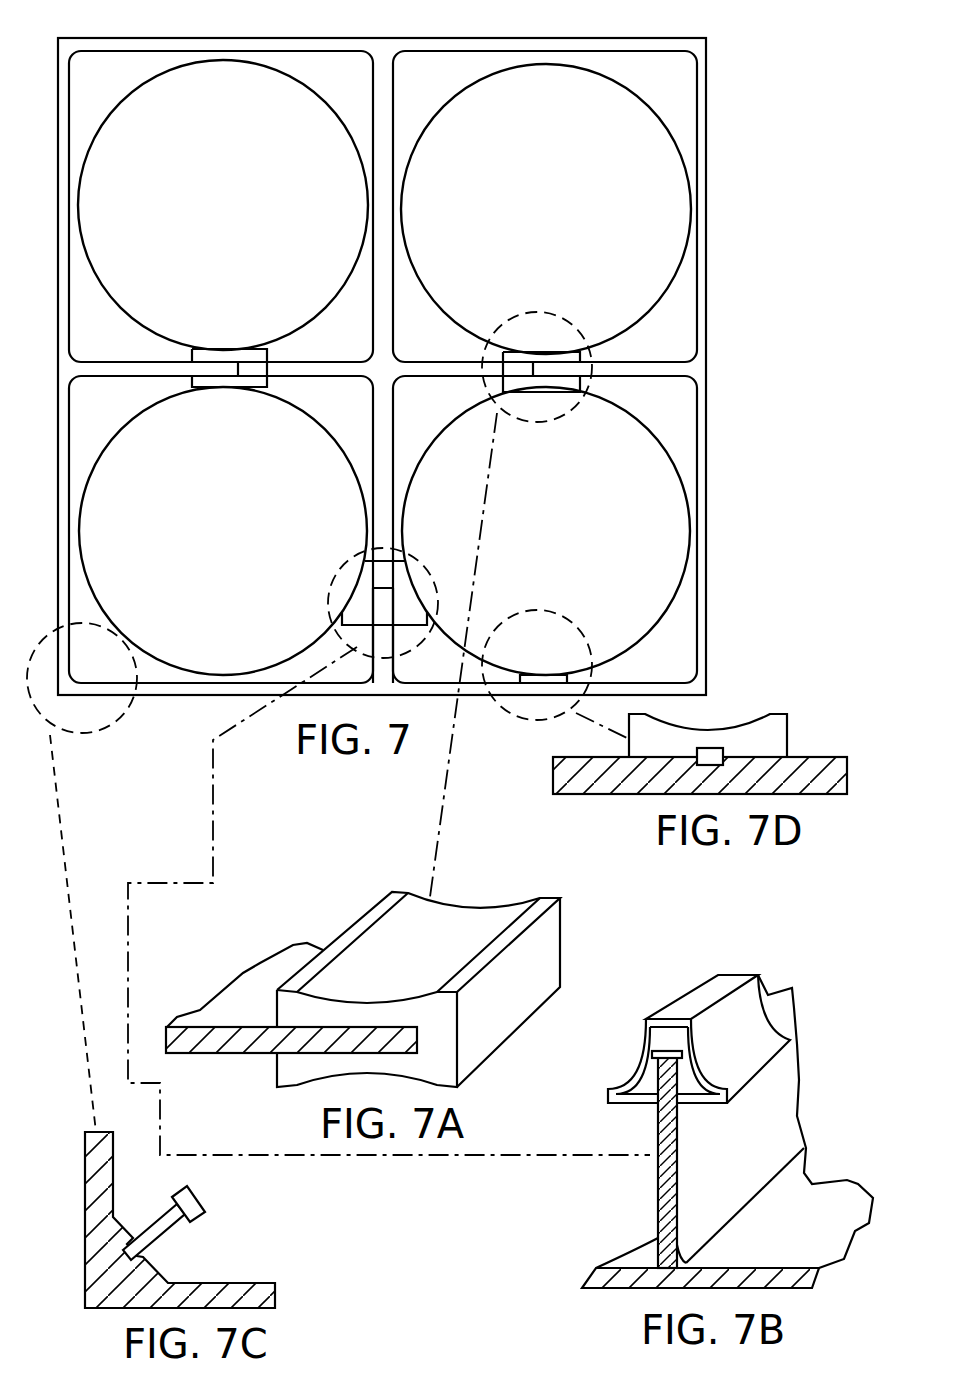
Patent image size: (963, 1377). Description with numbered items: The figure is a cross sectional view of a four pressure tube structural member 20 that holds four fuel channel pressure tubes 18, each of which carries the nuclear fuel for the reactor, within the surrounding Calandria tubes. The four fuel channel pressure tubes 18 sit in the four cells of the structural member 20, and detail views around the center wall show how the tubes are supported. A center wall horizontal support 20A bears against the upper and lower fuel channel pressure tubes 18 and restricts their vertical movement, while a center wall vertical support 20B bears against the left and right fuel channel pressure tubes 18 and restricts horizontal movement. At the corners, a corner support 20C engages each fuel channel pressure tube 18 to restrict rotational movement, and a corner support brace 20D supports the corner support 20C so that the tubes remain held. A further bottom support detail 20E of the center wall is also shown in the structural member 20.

In FIG. 7, the fuel channel pressure tube 18 is at (643, 100).
In FIG. 7, the four pressure tube structural member 20 is at (705, 133).
In FIG. 7D, the four pressure tube structural member 20 is at (617, 773).
In FIG. 7A, the four pressure tube structural member 20 is at (215, 1040).
In FIG. 7B, the four pressure tube structural member 20 is at (657, 1184).
In FIG. 7C, the four pressure tube structural member 20 is at (92, 1137).
In FIG. 7A, the center wall horizontal support 20A is at (473, 922).
In FIG. 7B, the center wall vertical support 20B is at (727, 983).
In FIG. 7C, the corner support 20C is at (202, 1197).
In FIG. 7C, the corner support brace 20D is at (167, 1228).
In FIG. 7D, the curved stop block 20E is at (755, 737).